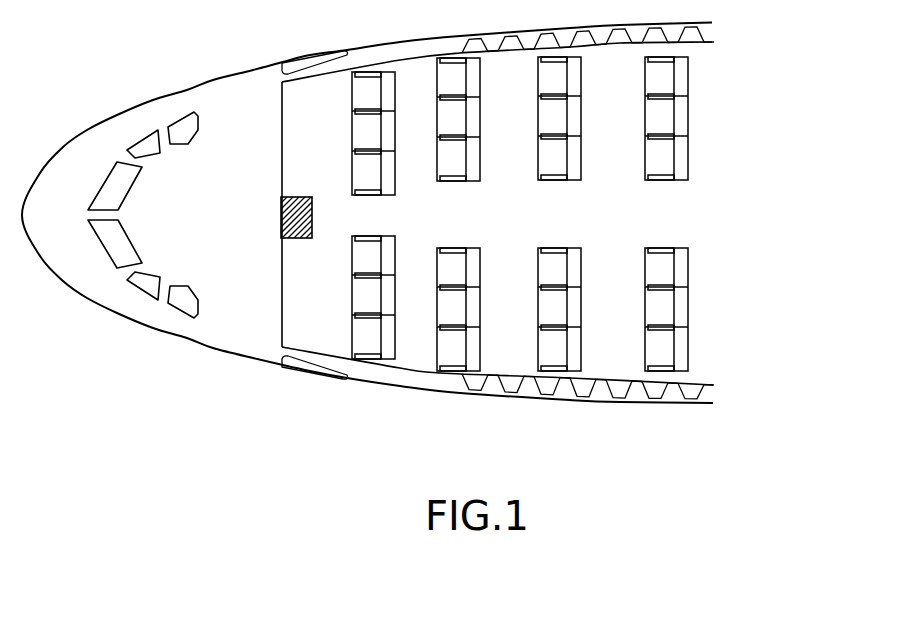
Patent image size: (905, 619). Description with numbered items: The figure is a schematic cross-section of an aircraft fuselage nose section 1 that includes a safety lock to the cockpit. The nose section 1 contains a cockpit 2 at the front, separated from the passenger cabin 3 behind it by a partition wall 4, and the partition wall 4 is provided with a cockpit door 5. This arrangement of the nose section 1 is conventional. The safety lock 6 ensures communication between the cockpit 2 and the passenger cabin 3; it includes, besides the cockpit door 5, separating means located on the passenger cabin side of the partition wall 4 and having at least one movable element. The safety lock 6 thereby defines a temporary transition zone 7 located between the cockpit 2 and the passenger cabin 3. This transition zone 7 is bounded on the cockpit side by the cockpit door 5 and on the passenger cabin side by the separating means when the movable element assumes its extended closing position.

The aircraft fuselage nose section 1 is at (307, 465).
The cockpit 2 is at (215, 320).
The passenger cabin 3 is at (515, 348).
The partition wall 4 is at (280, 127).
The cockpit door 5 is at (281, 208).
The safety lock 6 is at (304, 189).
The temporary transition zone 7 is at (299, 222).